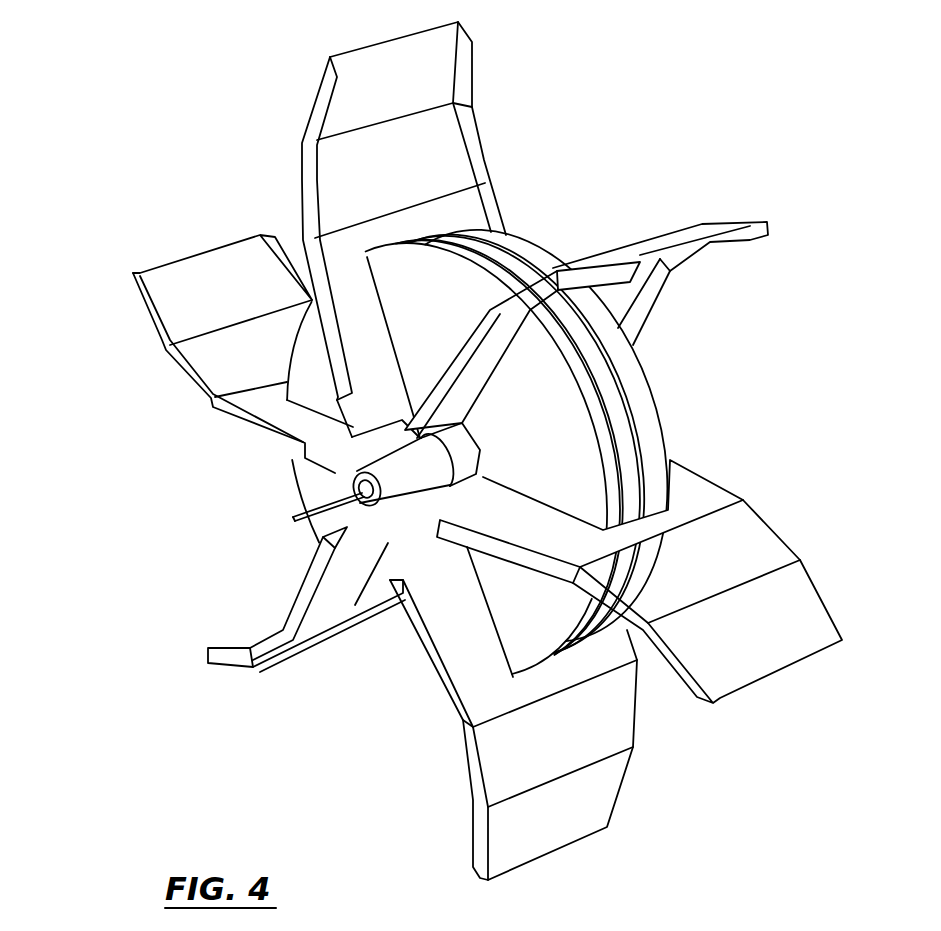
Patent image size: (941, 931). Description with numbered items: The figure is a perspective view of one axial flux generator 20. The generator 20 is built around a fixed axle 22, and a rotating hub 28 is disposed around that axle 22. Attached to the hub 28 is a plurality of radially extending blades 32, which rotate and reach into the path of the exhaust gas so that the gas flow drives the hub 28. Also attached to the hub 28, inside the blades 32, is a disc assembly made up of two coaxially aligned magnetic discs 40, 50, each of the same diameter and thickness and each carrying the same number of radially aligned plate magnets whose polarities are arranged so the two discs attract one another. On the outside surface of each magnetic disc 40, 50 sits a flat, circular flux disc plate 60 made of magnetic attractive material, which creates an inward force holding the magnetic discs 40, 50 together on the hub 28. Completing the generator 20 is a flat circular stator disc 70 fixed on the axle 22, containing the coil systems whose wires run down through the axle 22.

The axial flux generator 20 is at (150, 116).
The fixed axle 22 is at (352, 484).
The rotating hub 28 is at (472, 450).
The blades 32 is at (455, 53).
The magnetic disc 40 is at (460, 240).
The magnetic disc 50 is at (524, 252).
The flux disc plate 60 is at (390, 246).
The stator disc 70 is at (612, 390).